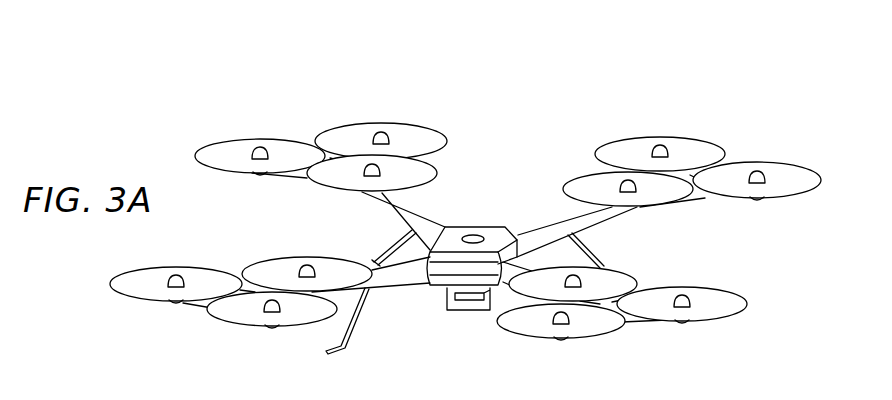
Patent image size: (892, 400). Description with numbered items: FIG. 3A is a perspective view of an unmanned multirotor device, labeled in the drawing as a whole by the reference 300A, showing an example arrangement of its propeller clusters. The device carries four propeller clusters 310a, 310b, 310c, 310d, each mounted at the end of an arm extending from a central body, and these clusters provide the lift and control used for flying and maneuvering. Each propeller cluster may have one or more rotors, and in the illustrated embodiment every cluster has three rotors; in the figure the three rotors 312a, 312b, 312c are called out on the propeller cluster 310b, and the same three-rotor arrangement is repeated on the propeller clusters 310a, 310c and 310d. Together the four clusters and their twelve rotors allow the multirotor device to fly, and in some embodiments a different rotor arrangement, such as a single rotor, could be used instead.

The unmanned aerial vehicle 300A is at (558, 68).
The propeller cluster 310a is at (737, 151).
The propeller cluster 310b is at (651, 342).
The propeller cluster 310c is at (186, 320).
The propeller cluster 310d is at (300, 128).
The rotor 312a is at (517, 334).
The rotor 312b is at (626, 272).
The rotor 312c is at (714, 288).